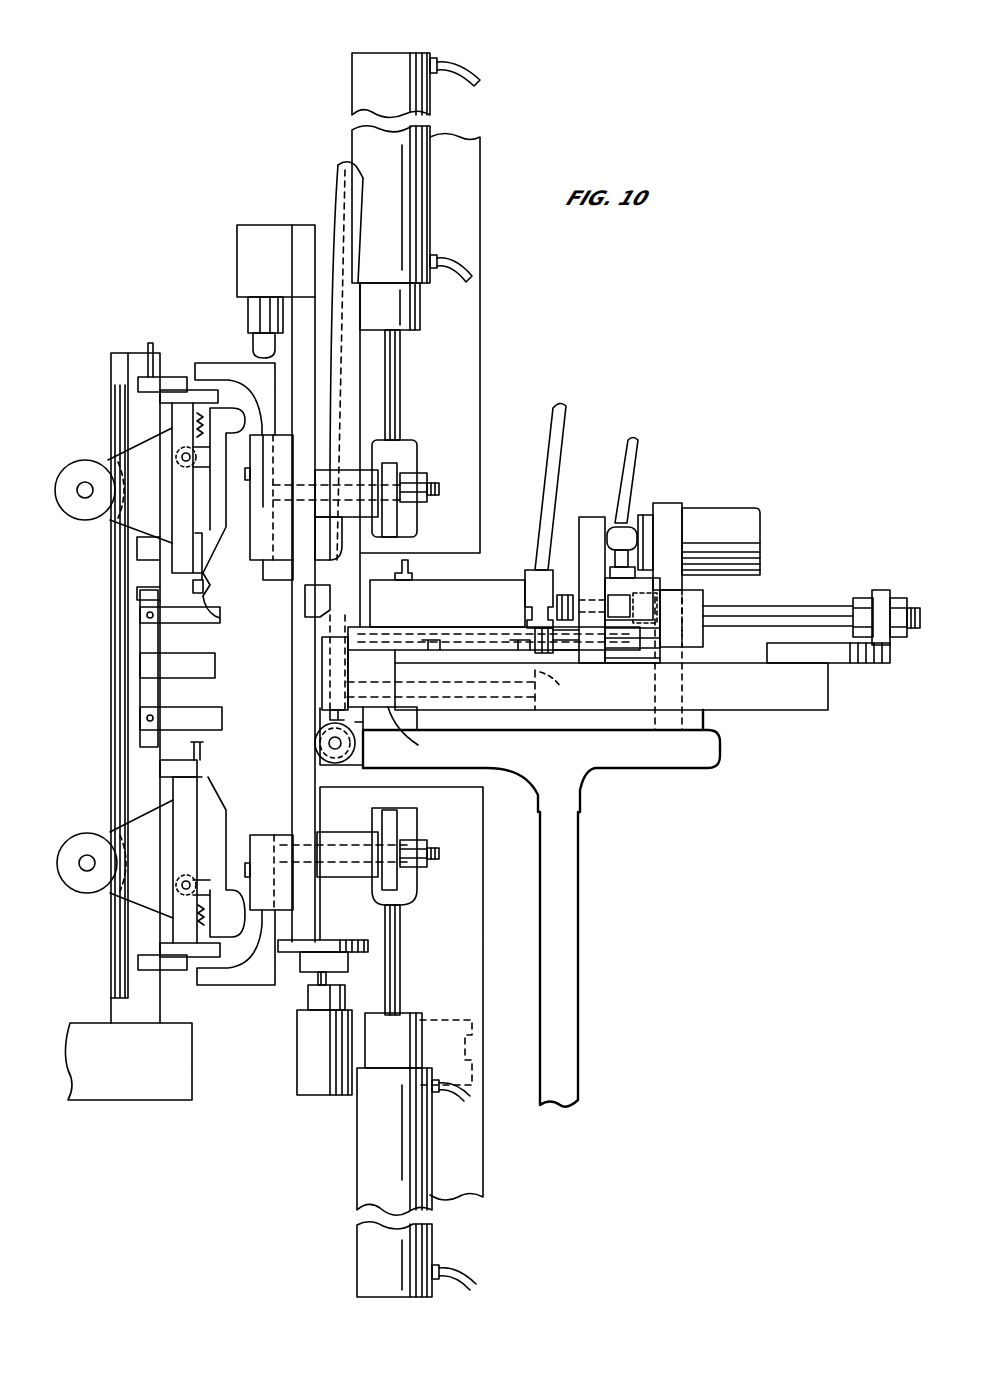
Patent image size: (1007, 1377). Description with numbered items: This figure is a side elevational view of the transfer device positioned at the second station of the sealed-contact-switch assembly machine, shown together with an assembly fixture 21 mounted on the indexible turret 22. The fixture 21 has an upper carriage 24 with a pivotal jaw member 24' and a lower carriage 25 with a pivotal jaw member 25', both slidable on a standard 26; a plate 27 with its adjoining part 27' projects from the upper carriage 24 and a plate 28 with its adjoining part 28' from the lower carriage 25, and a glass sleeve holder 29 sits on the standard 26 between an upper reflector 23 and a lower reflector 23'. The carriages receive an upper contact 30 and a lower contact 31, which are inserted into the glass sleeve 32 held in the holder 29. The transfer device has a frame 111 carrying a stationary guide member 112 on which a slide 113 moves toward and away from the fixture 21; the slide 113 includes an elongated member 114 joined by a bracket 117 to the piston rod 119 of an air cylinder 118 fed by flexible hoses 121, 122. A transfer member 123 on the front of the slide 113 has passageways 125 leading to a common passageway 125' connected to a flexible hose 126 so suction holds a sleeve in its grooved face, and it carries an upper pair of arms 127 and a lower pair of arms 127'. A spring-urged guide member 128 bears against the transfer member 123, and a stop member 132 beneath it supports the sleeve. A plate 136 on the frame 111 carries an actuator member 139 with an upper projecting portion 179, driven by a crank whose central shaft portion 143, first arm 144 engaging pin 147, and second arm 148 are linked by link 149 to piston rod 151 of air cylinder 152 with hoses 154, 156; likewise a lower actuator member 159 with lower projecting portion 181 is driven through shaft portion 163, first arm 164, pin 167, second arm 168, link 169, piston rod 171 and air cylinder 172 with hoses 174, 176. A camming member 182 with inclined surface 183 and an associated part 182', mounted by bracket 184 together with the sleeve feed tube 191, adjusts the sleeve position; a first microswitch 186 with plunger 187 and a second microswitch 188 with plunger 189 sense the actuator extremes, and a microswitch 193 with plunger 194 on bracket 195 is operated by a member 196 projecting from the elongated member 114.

The assembly fixture 21 is at (103, 331).
The indexible turret 22 is at (138, 1090).
The upper reflector 23 is at (180, 668).
The lower reflector 23' is at (196, 716).
The upper carriage 24 is at (127, 484).
The pivotal jaw member 24' is at (224, 587).
The lower carriage 25 is at (129, 872).
The pivotal jaw member 25' is at (204, 851).
The standard 26 is at (120, 640).
The plate 27 is at (189, 455).
The upper rod 27' is at (156, 356).
The plate 28 is at (138, 959).
The lower rod 28' is at (122, 984).
The glass sleeve holder 29 is at (213, 662).
The upper contact 30 is at (222, 614).
The lower contact 31 is at (193, 750).
The glass sleeve 32 is at (368, 637).
The frame 111 is at (580, 888).
The stationary guide member 112 is at (606, 750).
The slide 113 is at (798, 730).
The elongated member 114 is at (745, 710).
The bracket 117 is at (850, 650).
The air cylinder 118 is at (485, 578).
The piston rod 119 is at (772, 608).
The flexible hose 121 is at (636, 455).
The flexible hose 122 is at (410, 575).
The transfer member 123 is at (365, 670).
The passageways 125 is at (498, 681).
The common passageway 125' is at (568, 685).
The flexible hose 126 is at (560, 435).
The upper pair of arms 127 is at (494, 617).
The lower pair of arms 127' is at (422, 730).
The guide member 128 is at (335, 667).
The stop member 132 is at (378, 718).
The plate 136 is at (300, 276).
The actuator member 139 is at (330, 560).
The central shaft portion 143 is at (430, 482).
The first arm 144 is at (222, 550).
The pin 147 is at (215, 466).
The second arm 148 is at (400, 518).
The link 149 is at (410, 440).
The piston rod 151 is at (400, 370).
The air cylinder 152 is at (422, 195).
The flexible hose 154 is at (470, 275).
The flexible hose 156 is at (478, 80).
The lower actuator member 159 is at (295, 775).
The central shaft portion 163 is at (340, 845).
The first arm 164 is at (253, 835).
The pin 167 is at (240, 870).
The second arm 168 is at (400, 888).
The link 169 is at (420, 843).
The piston rod 171 is at (400, 965).
The air cylinder 172 is at (358, 1165).
The flexible hose 174 is at (470, 1095).
The flexible hose 176 is at (478, 1282).
The upper projecting portion 179 is at (212, 362).
The lower projecting portion 181 is at (200, 980).
The camming member 182 is at (272, 623).
The clip 182' is at (290, 728).
The inclined surface 183 is at (328, 595).
The bracket 184 is at (380, 538).
The first microswitch 186 is at (250, 222).
The plunger 187 is at (258, 335).
The second microswitch 188 is at (315, 1070).
The plunger 189 is at (315, 985).
The tube 191 is at (350, 393).
The microswitch 193 is at (750, 525).
The plunger 194 is at (625, 535).
The bracket 195 is at (670, 655).
The member 196 is at (585, 517).